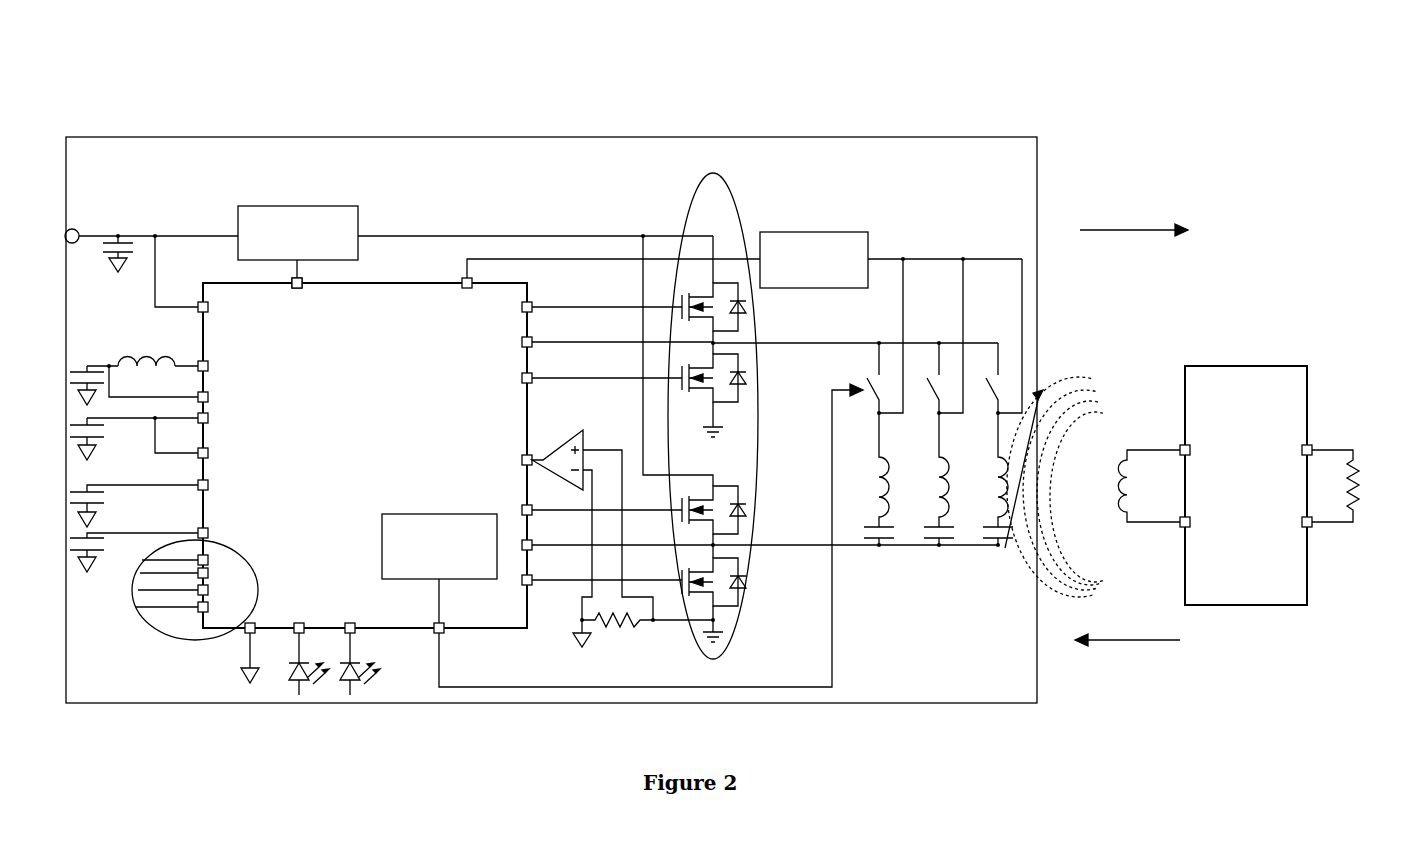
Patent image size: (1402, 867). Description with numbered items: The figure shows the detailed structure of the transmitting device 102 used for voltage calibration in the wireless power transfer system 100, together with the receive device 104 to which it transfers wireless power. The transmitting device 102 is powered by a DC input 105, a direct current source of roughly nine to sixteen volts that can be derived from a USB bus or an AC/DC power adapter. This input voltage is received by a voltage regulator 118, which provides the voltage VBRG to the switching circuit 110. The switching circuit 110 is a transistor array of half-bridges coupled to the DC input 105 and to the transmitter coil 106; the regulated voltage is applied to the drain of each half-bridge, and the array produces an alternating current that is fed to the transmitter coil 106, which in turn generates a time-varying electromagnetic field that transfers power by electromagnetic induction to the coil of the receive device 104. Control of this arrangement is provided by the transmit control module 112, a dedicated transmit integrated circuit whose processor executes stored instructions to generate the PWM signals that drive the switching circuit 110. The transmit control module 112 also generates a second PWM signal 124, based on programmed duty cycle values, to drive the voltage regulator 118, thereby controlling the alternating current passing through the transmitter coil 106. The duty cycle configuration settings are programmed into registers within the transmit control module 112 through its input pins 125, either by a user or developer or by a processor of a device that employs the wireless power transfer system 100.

The wireless power transfer system 100 is at (553, 92).
The transmitting device 102 is at (197, 147).
The receive device 104 is at (1252, 485).
The DC input 105 is at (105, 237).
The transmitter coil 106 is at (907, 482).
The switching circuit 110 is at (757, 517).
The transmit control module 112 is at (466, 507).
The voltage regulator 118 is at (307, 215).
The PWM signal 124 is at (313, 315).
The input pins 125 is at (195, 640).